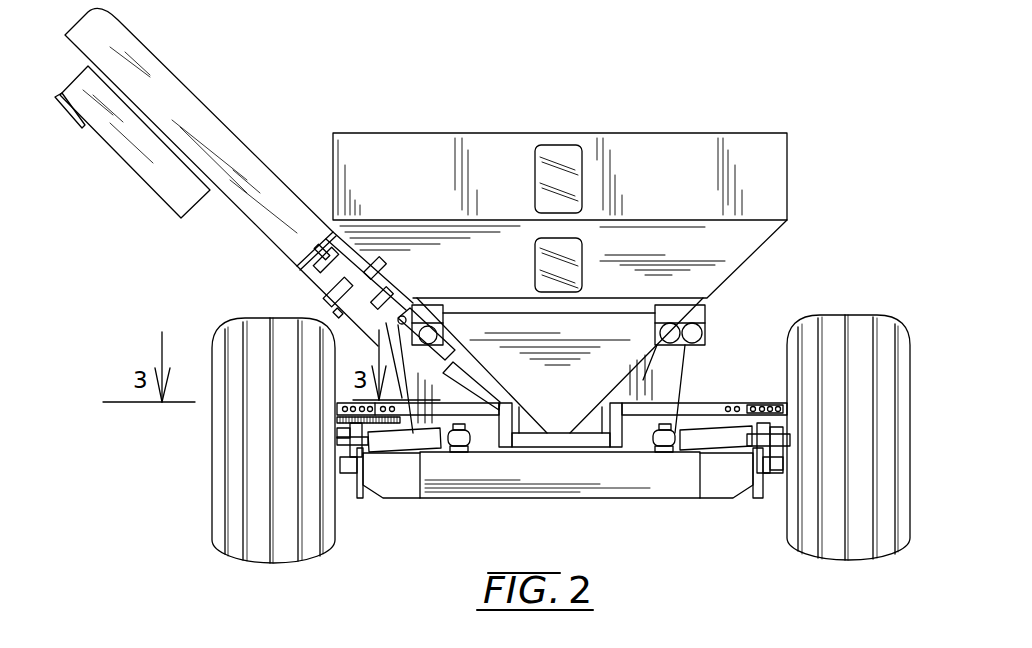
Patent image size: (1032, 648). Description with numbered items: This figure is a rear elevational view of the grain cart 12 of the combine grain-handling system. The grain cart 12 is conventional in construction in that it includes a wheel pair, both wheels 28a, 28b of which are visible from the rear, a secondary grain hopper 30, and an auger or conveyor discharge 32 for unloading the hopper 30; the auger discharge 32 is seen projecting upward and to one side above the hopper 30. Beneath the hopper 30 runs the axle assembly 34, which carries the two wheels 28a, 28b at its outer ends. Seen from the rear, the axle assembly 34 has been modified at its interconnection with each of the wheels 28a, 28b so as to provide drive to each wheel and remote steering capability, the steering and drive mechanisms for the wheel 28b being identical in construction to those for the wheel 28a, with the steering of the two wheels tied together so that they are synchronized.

The grain cart 12 is at (806, 71).
The wheel assembly 28a is at (840, 560).
The wheel assembly 28b is at (273, 563).
The secondary grain hopper 30 is at (628, 133).
The auger or conveyor discharge 32 is at (200, 98).
The axle assembly 34 is at (653, 498).